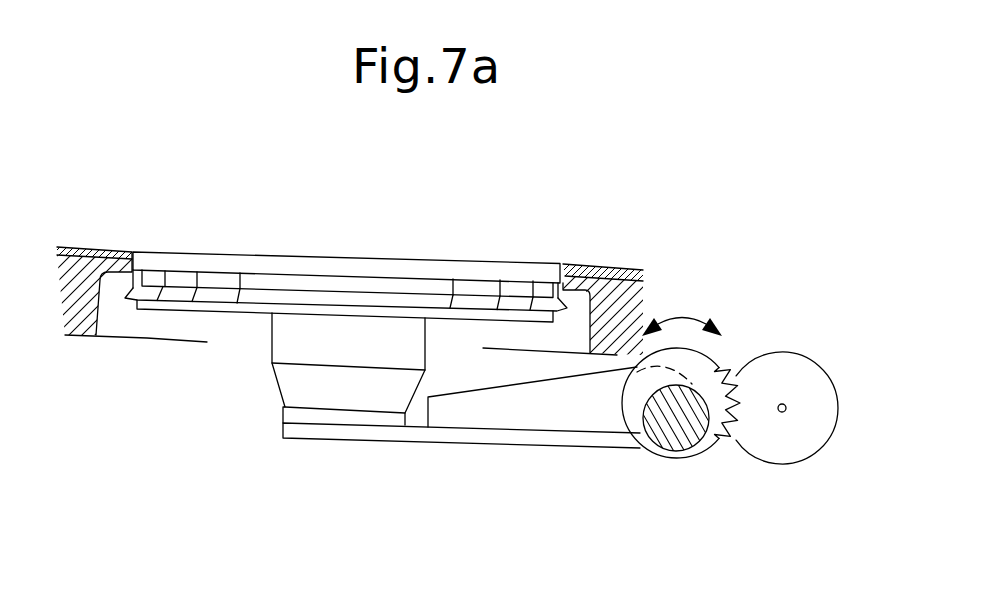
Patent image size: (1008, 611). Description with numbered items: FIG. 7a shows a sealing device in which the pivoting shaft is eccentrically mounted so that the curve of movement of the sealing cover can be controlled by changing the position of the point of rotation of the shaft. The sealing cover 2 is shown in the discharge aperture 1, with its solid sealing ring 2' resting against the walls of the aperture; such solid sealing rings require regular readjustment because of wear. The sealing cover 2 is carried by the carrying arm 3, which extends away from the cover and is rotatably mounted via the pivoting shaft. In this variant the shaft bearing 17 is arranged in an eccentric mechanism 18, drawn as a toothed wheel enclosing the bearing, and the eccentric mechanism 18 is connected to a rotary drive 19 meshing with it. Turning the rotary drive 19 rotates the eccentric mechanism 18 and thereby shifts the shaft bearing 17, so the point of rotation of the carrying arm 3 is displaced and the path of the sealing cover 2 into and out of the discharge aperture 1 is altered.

The discharge aperture 1 is at (200, 263).
The sealing cover 2 is at (345, 226).
The solid sealing ring 2' is at (346, 233).
The carrying arm 3 is at (390, 441).
The shaft bearing 17 is at (668, 452).
The eccentric mechanism 18 is at (702, 368).
The rotary drive 19 is at (780, 443).